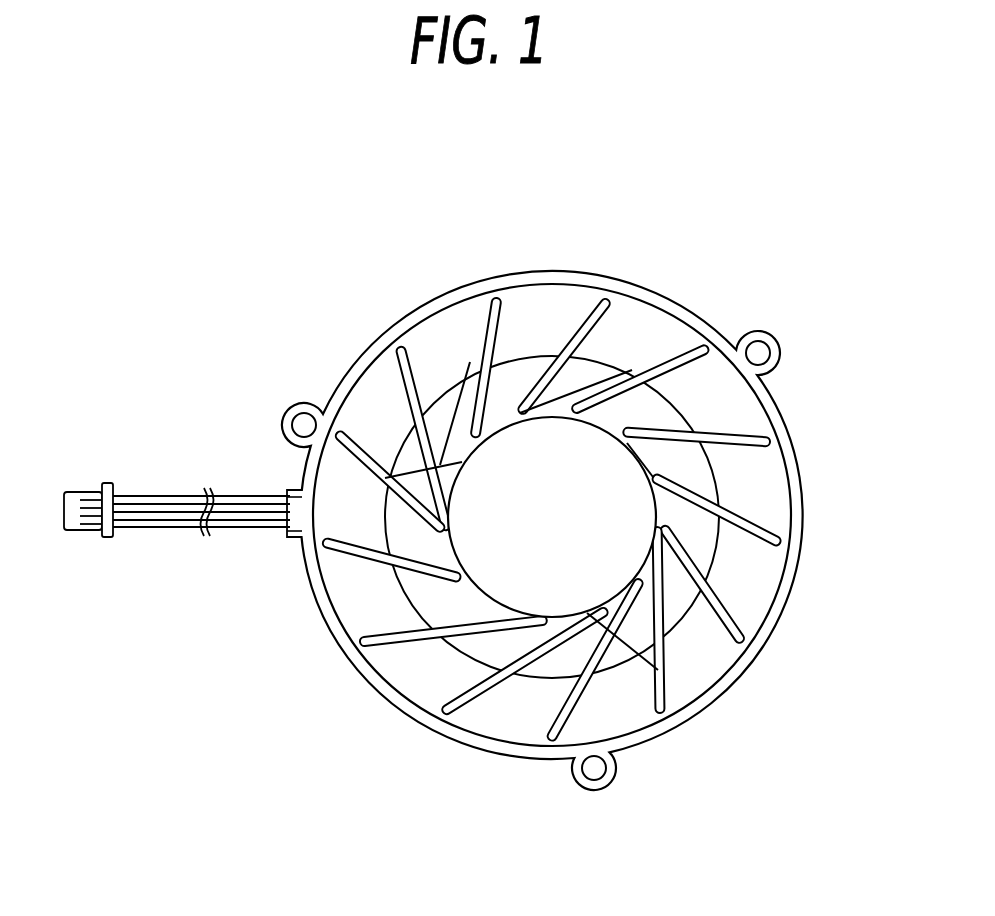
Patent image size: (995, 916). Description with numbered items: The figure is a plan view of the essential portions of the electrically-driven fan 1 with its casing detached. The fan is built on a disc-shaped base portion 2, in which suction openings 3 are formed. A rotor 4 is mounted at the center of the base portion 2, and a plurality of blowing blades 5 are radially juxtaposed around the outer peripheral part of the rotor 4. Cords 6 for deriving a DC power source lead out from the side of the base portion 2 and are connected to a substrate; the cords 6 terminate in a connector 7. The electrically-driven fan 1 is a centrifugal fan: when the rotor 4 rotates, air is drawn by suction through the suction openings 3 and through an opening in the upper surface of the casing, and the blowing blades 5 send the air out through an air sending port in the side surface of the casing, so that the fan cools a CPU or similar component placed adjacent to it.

The electrically-driven fan 1 is at (766, 268).
The disc-shaped base portion 2 is at (806, 534).
The suction openings 3 is at (677, 587).
The rotor 4 is at (623, 513).
The blowing blades 5 is at (640, 632).
The cords 6 is at (165, 496).
The connector 7 is at (78, 490).